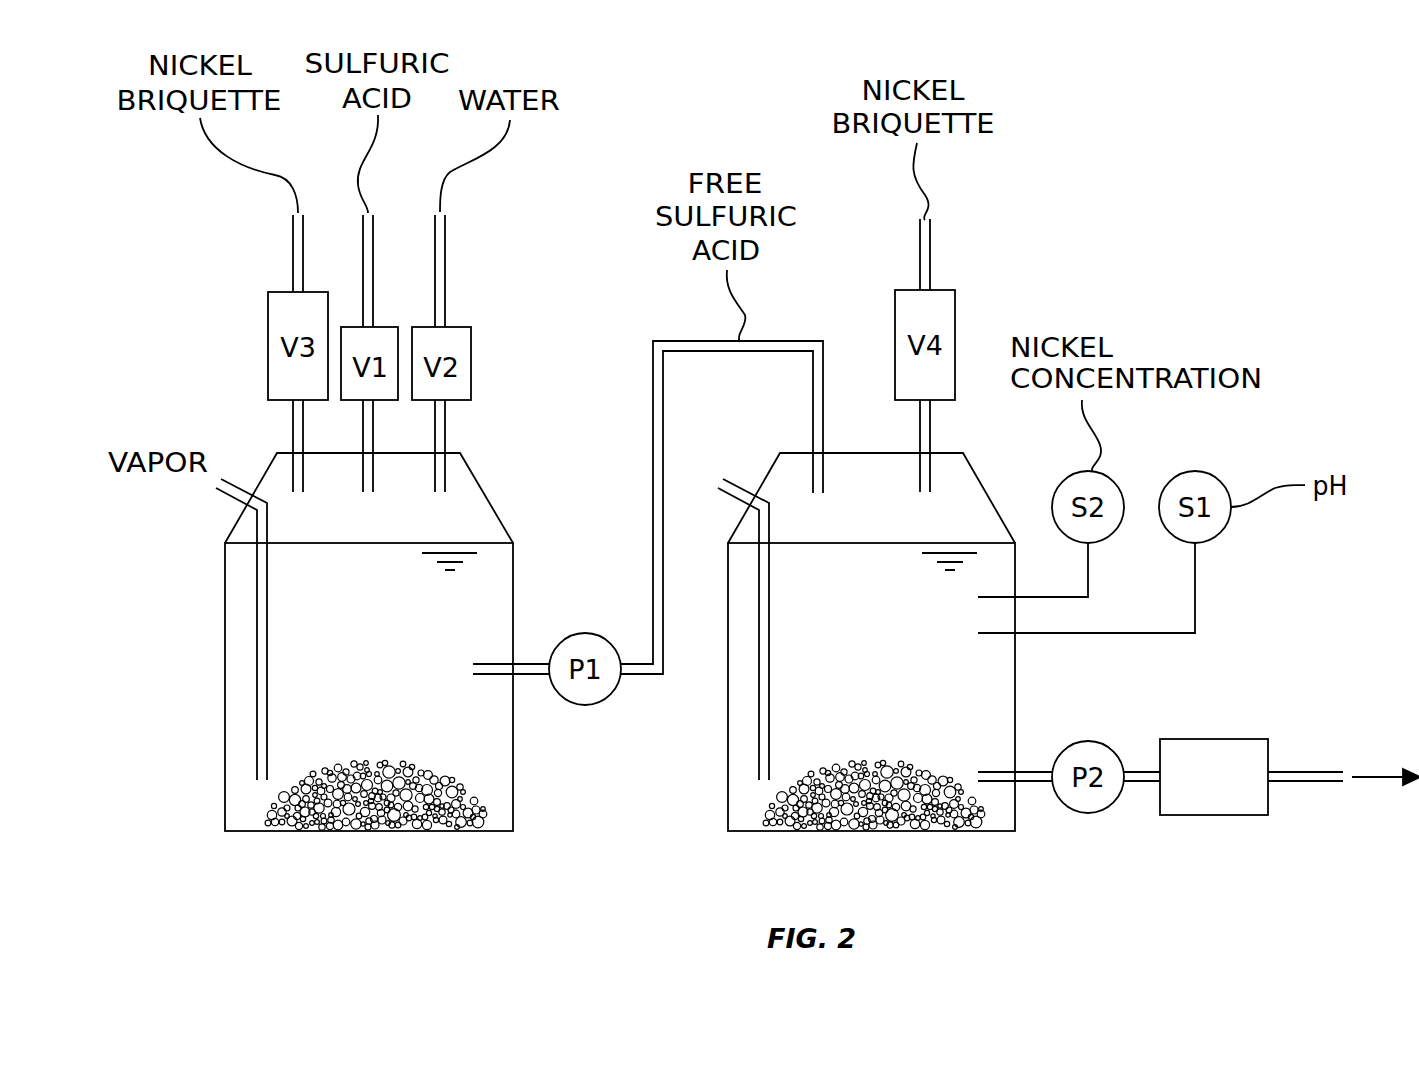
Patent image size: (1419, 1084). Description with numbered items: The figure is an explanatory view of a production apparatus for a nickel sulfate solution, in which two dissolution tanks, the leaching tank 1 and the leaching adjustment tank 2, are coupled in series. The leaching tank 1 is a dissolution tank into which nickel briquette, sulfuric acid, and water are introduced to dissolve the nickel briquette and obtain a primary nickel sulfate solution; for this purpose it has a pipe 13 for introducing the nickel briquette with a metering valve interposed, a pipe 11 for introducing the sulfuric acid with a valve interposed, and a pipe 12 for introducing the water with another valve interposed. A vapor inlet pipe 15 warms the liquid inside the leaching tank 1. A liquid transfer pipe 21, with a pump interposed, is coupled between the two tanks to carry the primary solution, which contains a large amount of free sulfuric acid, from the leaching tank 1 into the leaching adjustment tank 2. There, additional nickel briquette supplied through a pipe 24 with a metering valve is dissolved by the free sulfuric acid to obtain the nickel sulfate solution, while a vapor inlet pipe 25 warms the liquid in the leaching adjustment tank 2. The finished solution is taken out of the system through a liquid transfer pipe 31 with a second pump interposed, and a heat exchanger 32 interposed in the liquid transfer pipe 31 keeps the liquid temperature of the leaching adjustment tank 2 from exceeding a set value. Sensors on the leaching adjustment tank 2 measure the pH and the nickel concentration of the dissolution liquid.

The leaching tank 1 is at (368, 832).
The leaching adjustment tank 2 is at (873, 832).
The pipe for introducing the sulfuric acid 11 is at (377, 307).
The pipe for introducing the water 12 is at (447, 277).
The pipe for introducing the nickel briquette 13 is at (293, 253).
The vapor inlet pipe 15 is at (222, 489).
The liquid transfer pipe 21 is at (653, 445).
The pipe for introducing the additional nickel briquette 24 is at (930, 257).
The vapor inlet pipe 25 is at (745, 488).
The liquid transfer pipe 31 is at (1032, 781).
The heat exchanger 32 is at (1214, 777).